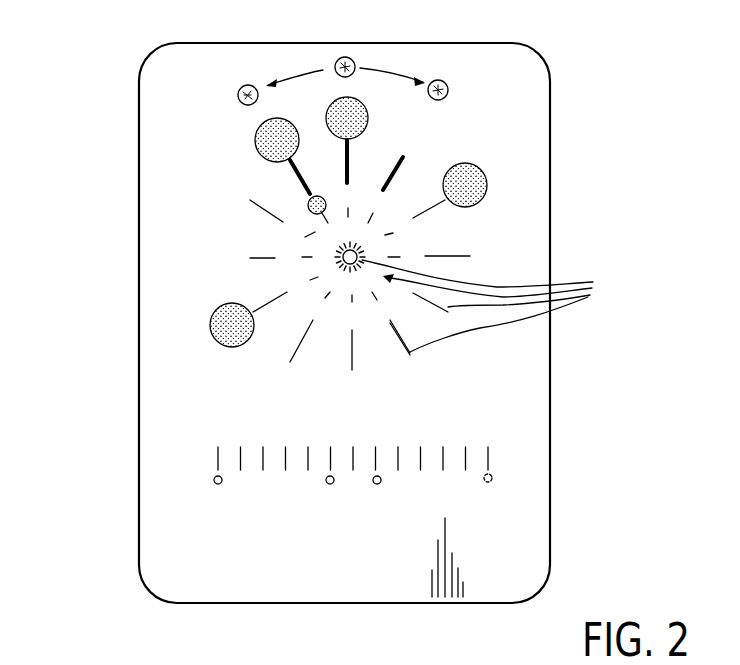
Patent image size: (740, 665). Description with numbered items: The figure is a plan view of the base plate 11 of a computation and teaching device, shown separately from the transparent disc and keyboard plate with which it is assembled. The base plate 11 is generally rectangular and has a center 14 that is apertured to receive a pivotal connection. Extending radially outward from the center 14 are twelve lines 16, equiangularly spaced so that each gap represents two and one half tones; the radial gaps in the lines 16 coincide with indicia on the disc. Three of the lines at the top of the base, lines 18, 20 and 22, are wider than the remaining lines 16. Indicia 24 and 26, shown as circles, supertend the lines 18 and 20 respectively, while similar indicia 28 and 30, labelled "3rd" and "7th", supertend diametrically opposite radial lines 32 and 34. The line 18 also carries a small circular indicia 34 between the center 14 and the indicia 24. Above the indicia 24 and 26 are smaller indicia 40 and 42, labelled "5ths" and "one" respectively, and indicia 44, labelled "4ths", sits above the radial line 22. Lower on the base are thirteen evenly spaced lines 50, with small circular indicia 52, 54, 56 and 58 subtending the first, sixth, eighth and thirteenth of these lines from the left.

The base plate 11 is at (528, 337).
The center 14 is at (360, 252).
The radial lines 16 is at (497, 307).
The wider radial line 18 is at (291, 164).
The wider radial line 20 is at (350, 158).
The wider radial line 22 is at (405, 162).
The indicia 24 is at (256, 133).
The indicia 26 is at (357, 103).
The indicia 28 is at (213, 335).
The indicia 30 is at (487, 190).
The radial line 32 is at (273, 297).
The radial line / small indicia 34 is at (308, 212).
The smaller indicia 40 is at (245, 85).
The smaller indicia 42 is at (345, 57).
The indicia 44 is at (445, 82).
The evenly spaced lines 50 is at (280, 452).
The circular indicia 52 is at (215, 484).
The circular indicia 54 is at (329, 485).
The circular indicia 56 is at (377, 485).
The circular indicia 58 is at (493, 487).